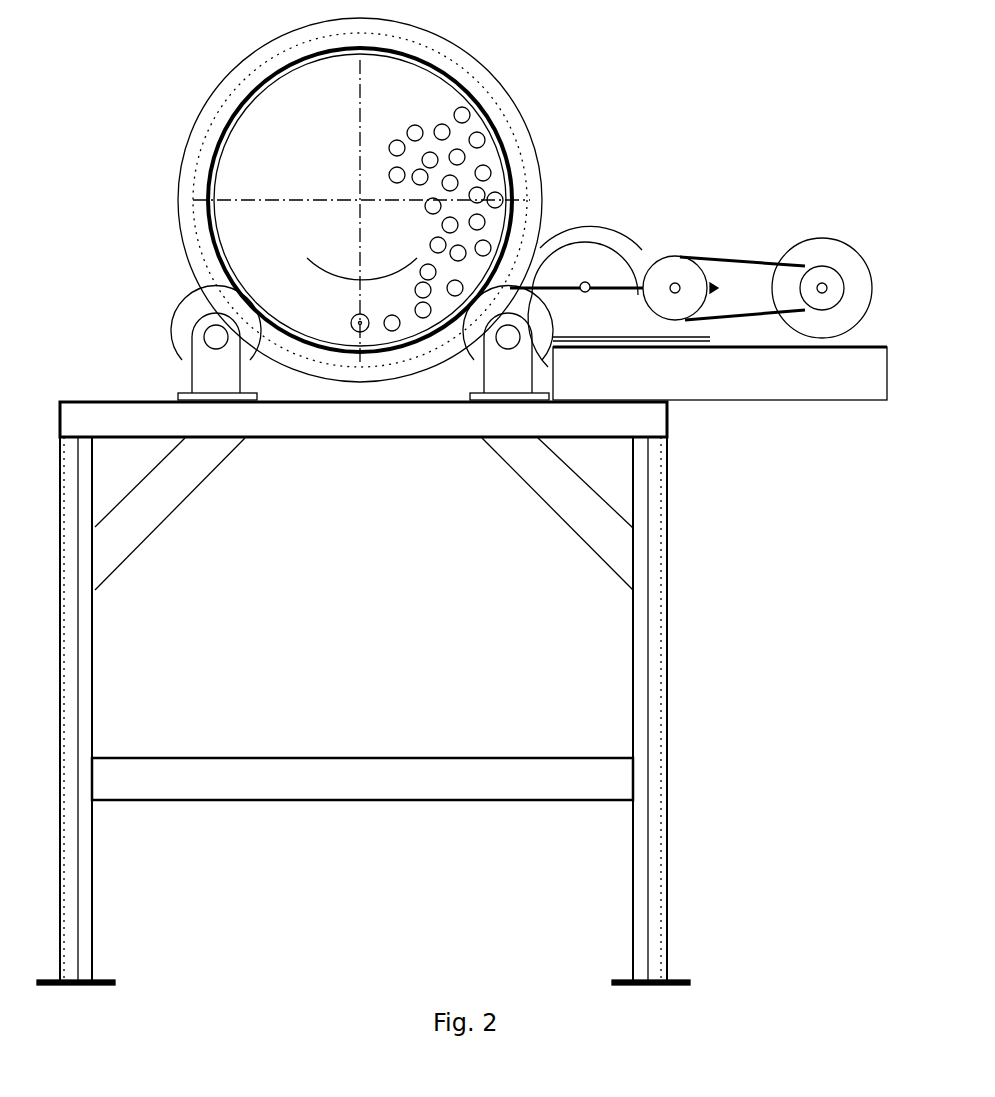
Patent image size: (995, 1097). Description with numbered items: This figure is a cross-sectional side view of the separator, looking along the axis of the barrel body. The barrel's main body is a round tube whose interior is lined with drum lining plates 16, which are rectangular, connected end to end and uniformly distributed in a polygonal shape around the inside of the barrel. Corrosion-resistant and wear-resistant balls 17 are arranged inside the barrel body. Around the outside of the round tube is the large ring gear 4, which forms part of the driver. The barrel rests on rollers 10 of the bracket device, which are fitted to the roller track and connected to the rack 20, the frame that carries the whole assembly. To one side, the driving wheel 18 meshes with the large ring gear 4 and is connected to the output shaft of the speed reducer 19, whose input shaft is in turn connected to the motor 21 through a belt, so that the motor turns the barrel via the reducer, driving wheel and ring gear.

The large ring gear 4 is at (190, 215).
The drum lining plate 16 is at (213, 142).
The corrosion-resistant and wear-resistant ball 17 is at (490, 127).
The roller 10 is at (172, 328).
The driving wheel 18 is at (587, 227).
The speed reducer 19 is at (645, 257).
The motor 21 is at (838, 262).
The rack 20 is at (650, 658).